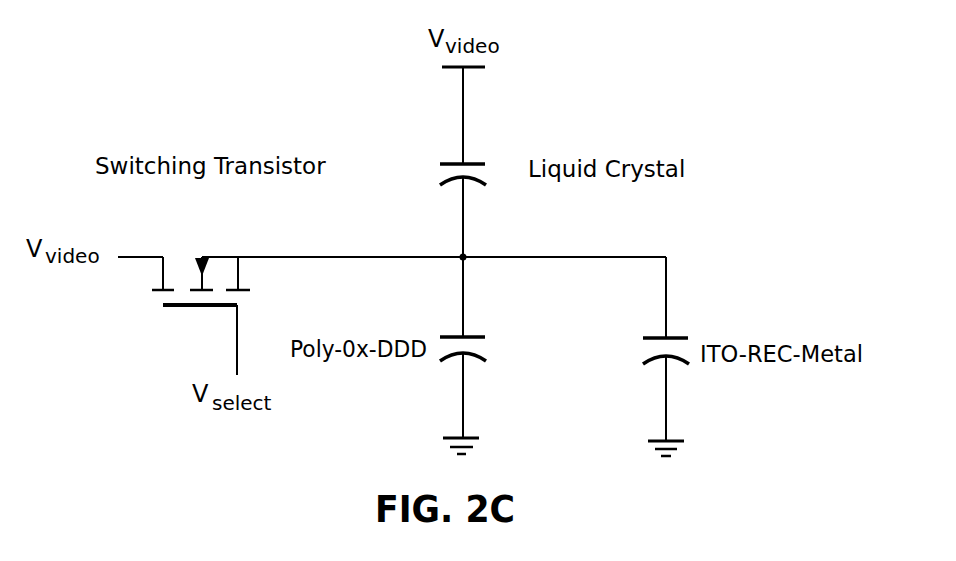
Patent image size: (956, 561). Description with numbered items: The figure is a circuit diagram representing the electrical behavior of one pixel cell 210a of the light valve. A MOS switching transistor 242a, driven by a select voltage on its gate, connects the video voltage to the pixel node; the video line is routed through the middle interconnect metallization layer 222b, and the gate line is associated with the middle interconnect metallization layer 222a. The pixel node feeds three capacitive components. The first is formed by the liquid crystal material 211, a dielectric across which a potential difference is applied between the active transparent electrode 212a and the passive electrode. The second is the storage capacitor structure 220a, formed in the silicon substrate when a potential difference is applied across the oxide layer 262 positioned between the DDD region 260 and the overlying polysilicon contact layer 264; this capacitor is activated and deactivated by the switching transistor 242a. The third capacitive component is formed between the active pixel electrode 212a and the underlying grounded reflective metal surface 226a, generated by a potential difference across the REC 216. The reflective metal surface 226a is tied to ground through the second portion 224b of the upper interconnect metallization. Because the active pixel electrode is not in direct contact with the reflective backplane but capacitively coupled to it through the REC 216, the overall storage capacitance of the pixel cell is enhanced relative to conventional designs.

The pixel cell 210a is at (249, 77).
The liquid crystal material 211 is at (482, 175).
The active transparent electrode 212a is at (457, 183).
The MOS switching transistor 242a is at (205, 240).
The middle interconnect metallization layer 222b is at (132, 258).
The middle interconnect metallization layer 222a is at (236, 343).
The storage capacitor structure 220a is at (459, 355).
The polysilicon contact layer 264 is at (473, 333).
The oxide layer 262 is at (473, 347).
The DDD region 260 is at (473, 363).
The REC 216 is at (679, 373).
The second portion of upper interconnect metallization 224b is at (662, 403).
The grounded reflective metal surface 226a is at (675, 363).